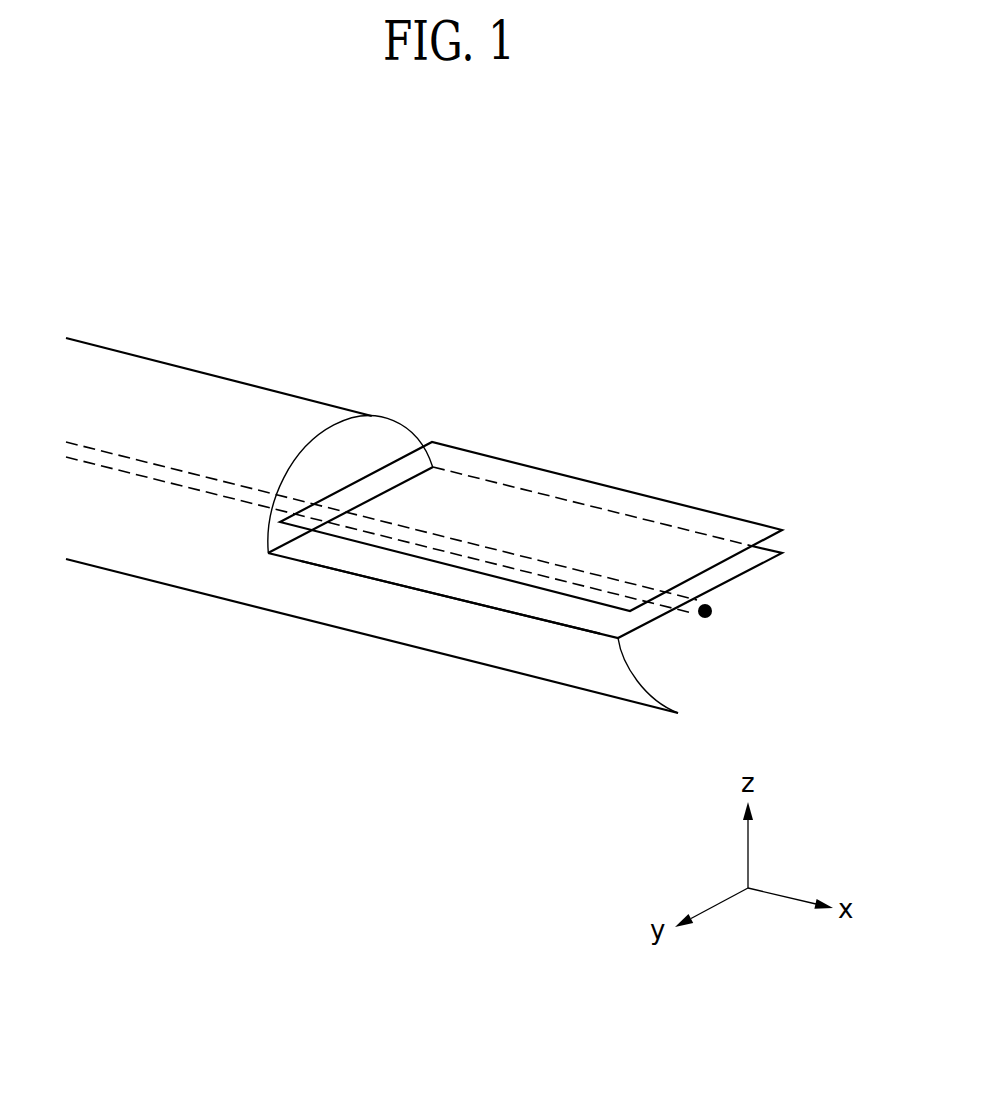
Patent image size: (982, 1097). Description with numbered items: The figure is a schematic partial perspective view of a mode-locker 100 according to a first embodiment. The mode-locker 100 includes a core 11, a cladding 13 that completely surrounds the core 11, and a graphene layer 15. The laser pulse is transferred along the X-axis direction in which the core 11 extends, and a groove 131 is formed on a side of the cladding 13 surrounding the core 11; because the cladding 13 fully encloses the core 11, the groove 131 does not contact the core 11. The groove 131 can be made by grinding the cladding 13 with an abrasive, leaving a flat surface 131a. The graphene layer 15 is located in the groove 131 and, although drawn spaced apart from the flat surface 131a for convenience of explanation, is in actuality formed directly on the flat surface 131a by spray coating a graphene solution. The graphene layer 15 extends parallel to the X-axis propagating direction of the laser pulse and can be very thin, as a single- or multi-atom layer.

The mode-locker 100 is at (451, 257).
The groove 131 is at (373, 428).
The flat surface 131a is at (455, 592).
The cladding 13 is at (650, 685).
The graphene layer 15 is at (588, 488).
The core 11 is at (713, 611).